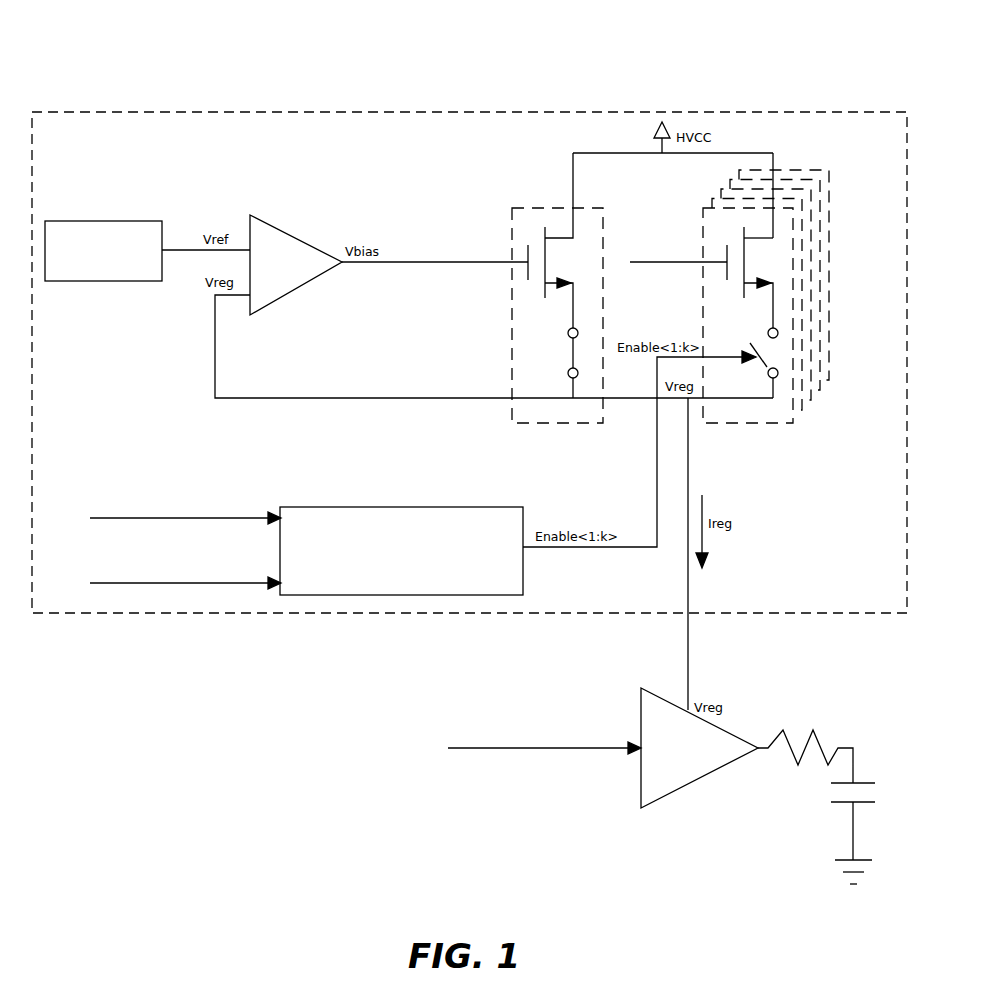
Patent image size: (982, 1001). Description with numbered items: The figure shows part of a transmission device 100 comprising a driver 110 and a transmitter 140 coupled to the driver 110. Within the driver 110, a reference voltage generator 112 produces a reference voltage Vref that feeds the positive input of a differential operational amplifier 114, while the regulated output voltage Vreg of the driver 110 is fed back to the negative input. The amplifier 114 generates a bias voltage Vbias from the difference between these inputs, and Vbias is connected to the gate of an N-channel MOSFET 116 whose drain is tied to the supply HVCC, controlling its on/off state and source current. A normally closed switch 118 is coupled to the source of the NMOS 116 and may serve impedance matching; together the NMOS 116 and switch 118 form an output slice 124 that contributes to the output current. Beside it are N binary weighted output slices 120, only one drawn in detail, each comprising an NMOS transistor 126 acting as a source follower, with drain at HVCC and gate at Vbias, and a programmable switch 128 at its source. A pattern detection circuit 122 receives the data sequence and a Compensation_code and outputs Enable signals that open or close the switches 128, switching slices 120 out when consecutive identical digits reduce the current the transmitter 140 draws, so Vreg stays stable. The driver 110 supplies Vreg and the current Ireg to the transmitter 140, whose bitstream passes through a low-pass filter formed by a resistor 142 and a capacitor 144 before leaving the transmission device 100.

The transmission device 100 is at (98, 58).
The driver 110 is at (111, 616).
The reference voltage generator 112 is at (125, 220).
The differential operational amplifier 114 is at (290, 234).
The N-channel MOSFET 116 is at (547, 277).
The switch 118 is at (572, 345).
The output slices 120 is at (765, 327).
The pattern detection circuit 122 is at (385, 506).
The output slice 124 is at (557, 319).
The NMOS transistor 126 is at (746, 277).
The switch 128 is at (758, 362).
The transmitter 140 is at (640, 782).
The resistor 142 is at (818, 729).
The capacitor 144 is at (866, 784).